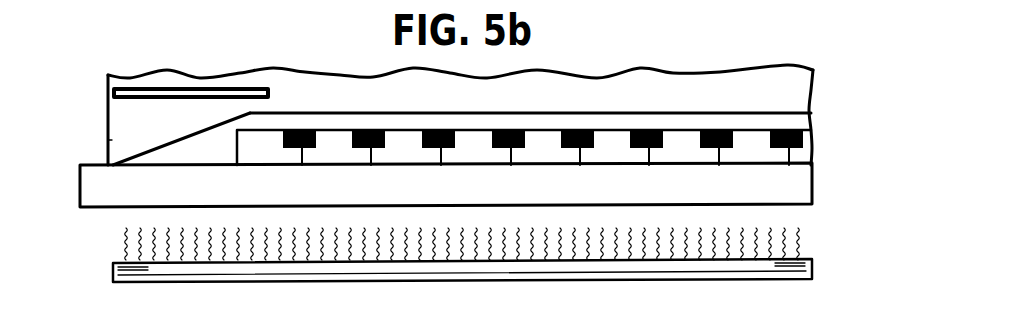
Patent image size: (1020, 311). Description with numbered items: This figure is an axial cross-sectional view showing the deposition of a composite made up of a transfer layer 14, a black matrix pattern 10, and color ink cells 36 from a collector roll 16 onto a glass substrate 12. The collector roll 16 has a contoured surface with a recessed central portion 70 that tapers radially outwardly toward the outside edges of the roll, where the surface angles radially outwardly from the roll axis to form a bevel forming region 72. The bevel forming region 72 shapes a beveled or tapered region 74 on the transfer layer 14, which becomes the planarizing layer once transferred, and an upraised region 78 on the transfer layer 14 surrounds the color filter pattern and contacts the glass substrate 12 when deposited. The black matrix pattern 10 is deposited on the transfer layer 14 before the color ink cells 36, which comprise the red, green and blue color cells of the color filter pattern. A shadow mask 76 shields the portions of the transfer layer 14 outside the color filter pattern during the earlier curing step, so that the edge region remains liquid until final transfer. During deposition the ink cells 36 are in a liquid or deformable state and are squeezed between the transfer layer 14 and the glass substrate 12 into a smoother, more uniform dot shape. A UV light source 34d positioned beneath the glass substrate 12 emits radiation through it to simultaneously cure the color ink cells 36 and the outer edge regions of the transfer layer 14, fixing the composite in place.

The black matrix pattern 10 is at (578, 148).
The glass substrate 12 is at (808, 187).
The transfer layer 14 is at (808, 118).
The collector roll 16 is at (107, 108).
The UV light source 34d is at (810, 268).
The color ink cells 36 is at (405, 148).
The recessed central portion 70 is at (672, 98).
The bevel forming region 72 is at (163, 146).
The beveled region 74 is at (200, 135).
The shadow mask 76 is at (175, 88).
The upraised region 78 is at (200, 167).